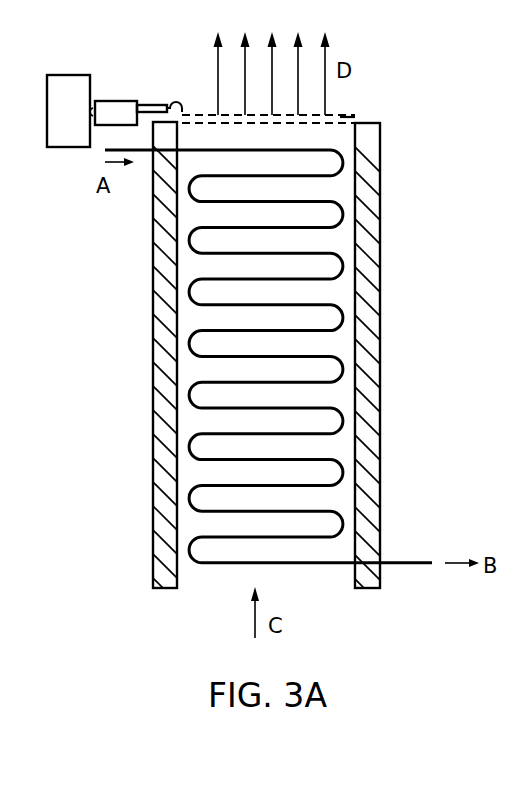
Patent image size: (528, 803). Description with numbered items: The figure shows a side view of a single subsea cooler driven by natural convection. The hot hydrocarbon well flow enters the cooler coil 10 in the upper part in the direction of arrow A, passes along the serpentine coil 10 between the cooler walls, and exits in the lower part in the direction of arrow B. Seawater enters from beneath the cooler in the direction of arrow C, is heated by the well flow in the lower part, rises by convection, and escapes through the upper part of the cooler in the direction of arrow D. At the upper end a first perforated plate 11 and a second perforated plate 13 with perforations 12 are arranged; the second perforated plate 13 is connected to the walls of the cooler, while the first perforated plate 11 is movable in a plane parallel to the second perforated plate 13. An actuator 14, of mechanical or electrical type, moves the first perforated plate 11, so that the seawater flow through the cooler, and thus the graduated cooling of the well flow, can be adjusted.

The cooler coil 10 is at (320, 148).
The first perforated plate 11 is at (362, 119).
The perforations 12 is at (330, 118).
The second perforated plate 13 is at (380, 123).
The actuator 14 is at (118, 100).